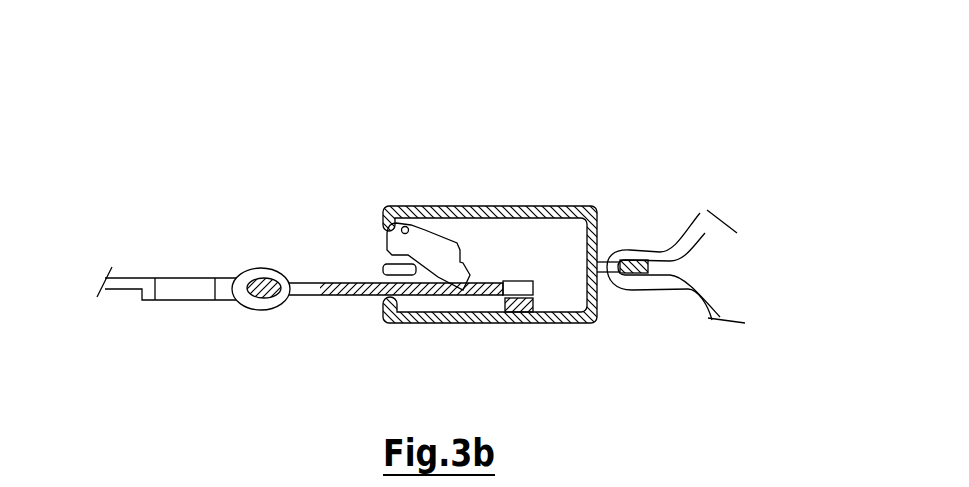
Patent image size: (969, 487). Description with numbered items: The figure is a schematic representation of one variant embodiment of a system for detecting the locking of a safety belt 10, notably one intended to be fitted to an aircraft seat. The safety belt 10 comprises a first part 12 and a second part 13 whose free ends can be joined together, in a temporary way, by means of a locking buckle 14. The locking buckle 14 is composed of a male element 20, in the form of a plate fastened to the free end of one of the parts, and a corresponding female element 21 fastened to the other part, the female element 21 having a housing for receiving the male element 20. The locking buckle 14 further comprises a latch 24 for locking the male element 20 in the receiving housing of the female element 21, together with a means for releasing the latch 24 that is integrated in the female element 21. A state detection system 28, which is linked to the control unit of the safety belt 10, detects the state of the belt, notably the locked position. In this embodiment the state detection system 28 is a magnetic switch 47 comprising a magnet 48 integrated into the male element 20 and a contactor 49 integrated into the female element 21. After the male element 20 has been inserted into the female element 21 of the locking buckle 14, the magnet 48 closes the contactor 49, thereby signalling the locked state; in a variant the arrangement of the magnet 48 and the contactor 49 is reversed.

The safety belt 10 is at (262, 147).
The first part 12 is at (141, 283).
The second part 13 is at (703, 207).
The locking buckle 14 is at (432, 206).
The male element 20 is at (367, 297).
The female element 21 is at (497, 210).
The latch 24 is at (400, 245).
The state detection system 28 is at (547, 282).
The magnetic switch 47 is at (503, 263).
The magnet 48 is at (520, 285).
The contactor 49 is at (515, 304).